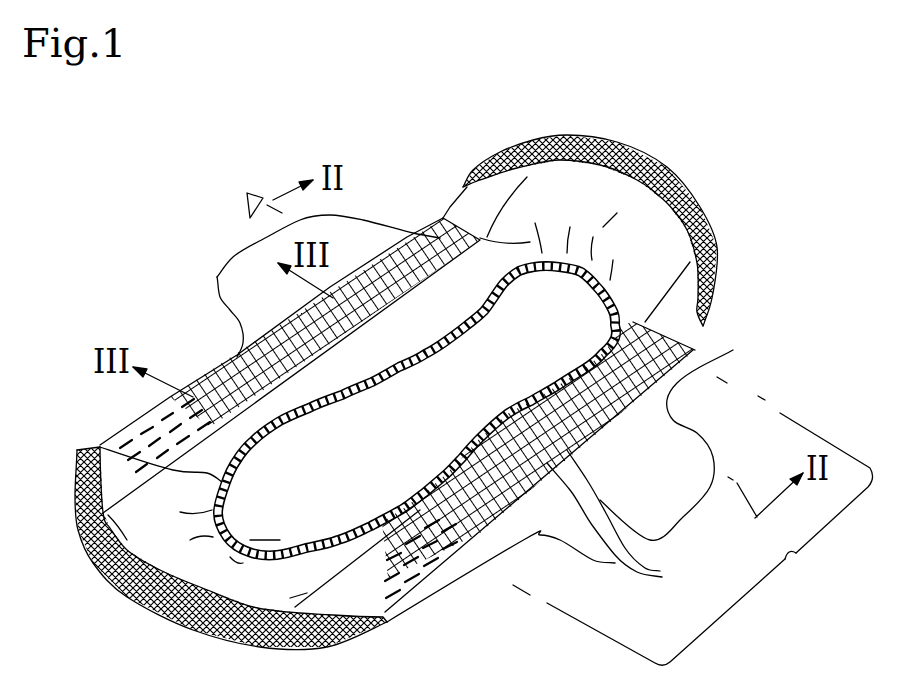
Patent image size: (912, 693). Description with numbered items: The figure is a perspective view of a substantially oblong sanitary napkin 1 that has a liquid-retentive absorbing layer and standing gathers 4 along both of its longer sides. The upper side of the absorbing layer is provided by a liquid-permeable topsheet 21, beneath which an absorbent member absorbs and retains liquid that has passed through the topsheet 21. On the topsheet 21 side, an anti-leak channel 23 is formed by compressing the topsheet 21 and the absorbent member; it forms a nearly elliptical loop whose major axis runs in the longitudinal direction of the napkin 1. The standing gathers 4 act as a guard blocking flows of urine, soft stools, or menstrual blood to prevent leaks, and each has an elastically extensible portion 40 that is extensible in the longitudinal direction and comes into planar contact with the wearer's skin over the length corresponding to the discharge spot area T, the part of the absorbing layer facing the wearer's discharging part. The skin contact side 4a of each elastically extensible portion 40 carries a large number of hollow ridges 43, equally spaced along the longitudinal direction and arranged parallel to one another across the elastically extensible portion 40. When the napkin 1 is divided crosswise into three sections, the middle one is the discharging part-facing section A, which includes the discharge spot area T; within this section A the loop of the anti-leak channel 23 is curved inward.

The sanitary napkin 1 is at (175, 185).
The topsheet 21 is at (575, 197).
The anti-leak channel 23 is at (143, 462).
The standing gathers 4 is at (283, 307).
The skin contact side 4a is at (263, 347).
The elastically extensible portion 40 is at (245, 365).
The hollow ridges 43 is at (358, 290).
The discharge spot area T is at (500, 383).
The discharging part-facing section A is at (693, 521).